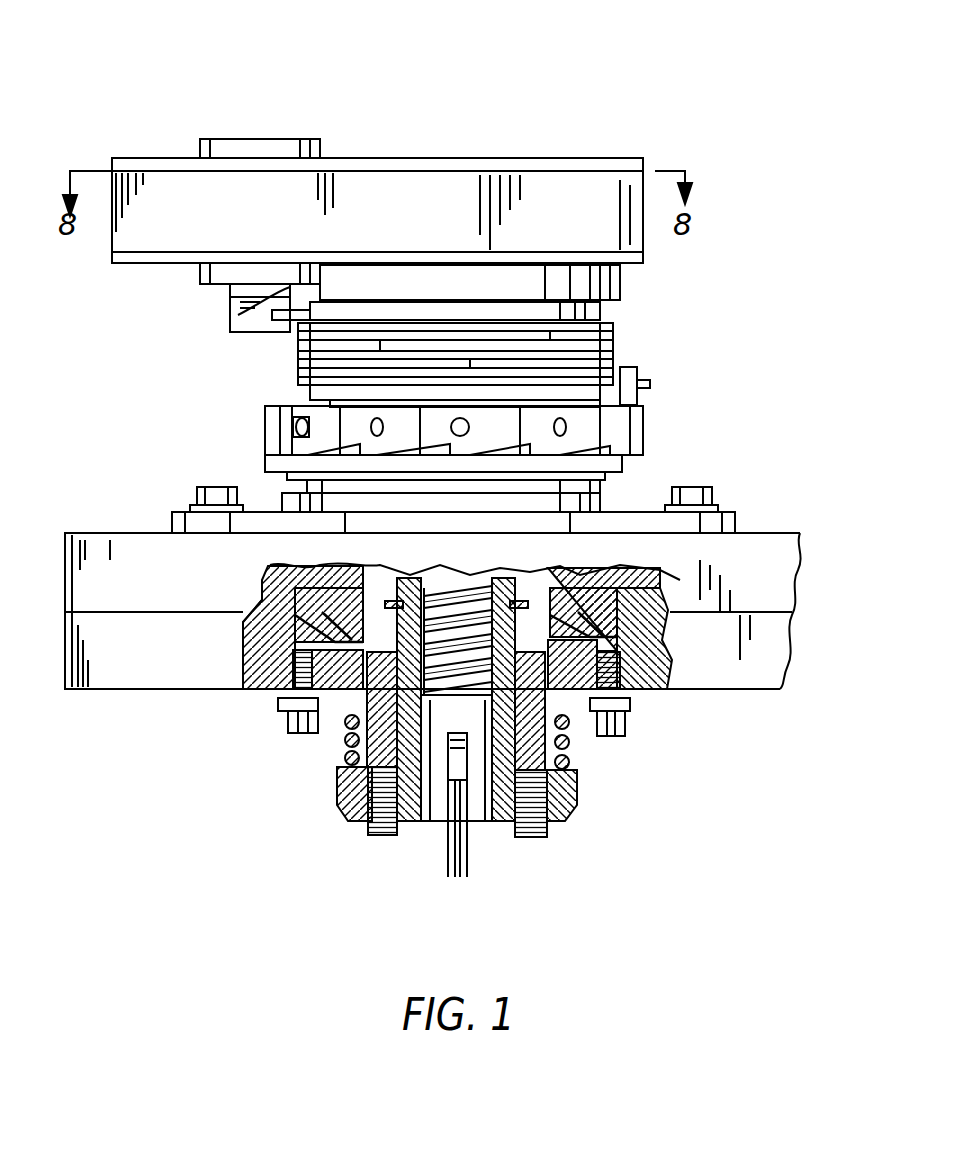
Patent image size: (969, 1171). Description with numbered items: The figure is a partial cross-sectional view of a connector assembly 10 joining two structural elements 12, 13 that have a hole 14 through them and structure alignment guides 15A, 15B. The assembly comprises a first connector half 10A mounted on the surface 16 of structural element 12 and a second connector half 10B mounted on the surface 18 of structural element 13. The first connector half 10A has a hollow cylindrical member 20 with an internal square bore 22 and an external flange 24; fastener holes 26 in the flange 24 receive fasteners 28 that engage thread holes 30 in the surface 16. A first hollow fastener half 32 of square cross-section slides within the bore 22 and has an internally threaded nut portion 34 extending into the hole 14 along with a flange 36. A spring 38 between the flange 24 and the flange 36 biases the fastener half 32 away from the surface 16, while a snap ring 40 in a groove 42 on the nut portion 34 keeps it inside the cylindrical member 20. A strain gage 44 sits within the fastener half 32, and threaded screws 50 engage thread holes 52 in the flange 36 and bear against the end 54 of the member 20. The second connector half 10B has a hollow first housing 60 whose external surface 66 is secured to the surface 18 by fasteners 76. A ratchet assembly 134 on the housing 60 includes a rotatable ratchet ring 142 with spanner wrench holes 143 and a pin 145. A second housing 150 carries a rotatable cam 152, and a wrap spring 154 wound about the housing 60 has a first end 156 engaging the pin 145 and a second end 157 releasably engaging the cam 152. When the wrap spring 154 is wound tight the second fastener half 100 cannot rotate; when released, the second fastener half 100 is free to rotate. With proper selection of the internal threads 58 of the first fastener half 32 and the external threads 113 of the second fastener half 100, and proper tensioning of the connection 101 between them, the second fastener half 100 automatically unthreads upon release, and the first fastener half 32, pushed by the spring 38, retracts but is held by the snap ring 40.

The connector assembly 10 is at (612, 100).
The first connector half 10A is at (234, 873).
The second connector half 10B is at (255, 115).
The structural element 12 is at (74, 691).
The structural element 13 is at (86, 533).
The hole 14 is at (372, 575).
The structure alignment guide 15A is at (330, 640).
The structure alignment guide 15B is at (265, 598).
The surface 16 is at (132, 691).
The surface 18 is at (790, 533).
The hollow cylindrical member 20 is at (345, 745).
The internal square bore 22 is at (415, 823).
The external flange 24 is at (632, 708).
The fastener holes 26 is at (625, 738).
The fasteners 28 is at (290, 720).
The thread holes 30 is at (640, 695).
The first hollow fastener half 32 is at (530, 822).
The internally threaded nut portion 34 is at (700, 645).
The flange 36 is at (345, 808).
The spring 38 is at (345, 780).
The snap ring 40 is at (690, 600).
The groove 42 is at (560, 580).
The strain gage 44 is at (470, 780).
The threaded screws 50 is at (375, 838).
The thread holes 52 is at (548, 838).
The end 54 is at (577, 805).
The internal threads 58 is at (268, 689).
The hollow first housing 60 is at (620, 284).
The external surface 66 is at (480, 575).
The fasteners 76 is at (220, 487).
The second fastener half 100 is at (512, 582).
The connection 101 is at (580, 710).
The external threads 113 is at (218, 492).
The ratchet assembly 134 is at (645, 456).
The rotatable ratchet ring 142 is at (645, 425).
The spanner wrench holes 143 is at (295, 427).
The pin 145 is at (632, 368).
The second housing 150 is at (397, 158).
The rotatable cam 152 is at (245, 315).
The wrap spring 154 is at (615, 325).
The first end 156 is at (652, 385).
The second end 157 is at (280, 318).